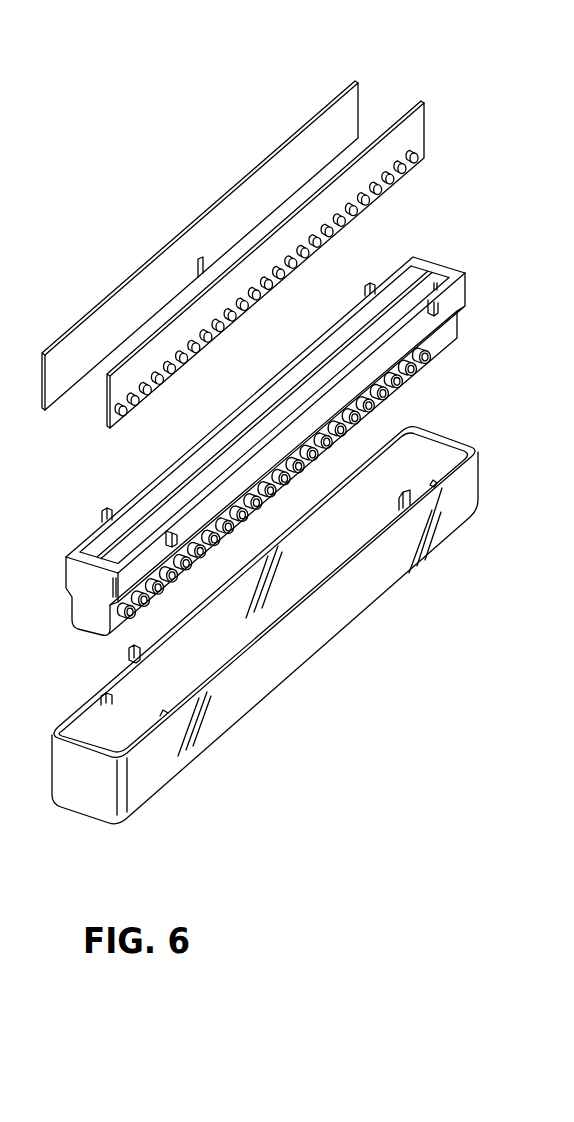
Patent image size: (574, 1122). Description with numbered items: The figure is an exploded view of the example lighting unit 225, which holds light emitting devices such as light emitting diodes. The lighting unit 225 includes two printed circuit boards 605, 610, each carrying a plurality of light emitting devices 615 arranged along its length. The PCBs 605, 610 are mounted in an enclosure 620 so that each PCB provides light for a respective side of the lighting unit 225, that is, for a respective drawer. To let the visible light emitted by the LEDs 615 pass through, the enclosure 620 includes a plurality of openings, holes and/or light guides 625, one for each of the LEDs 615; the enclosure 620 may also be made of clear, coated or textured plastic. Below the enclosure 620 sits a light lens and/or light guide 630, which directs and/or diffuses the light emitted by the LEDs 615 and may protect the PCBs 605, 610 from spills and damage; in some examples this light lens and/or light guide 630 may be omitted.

The lighting unit 225 is at (142, 185).
The printed circuit board 605 is at (347, 93).
The printed circuit board 610 is at (412, 108).
The light emitting device 615 is at (420, 160).
The enclosure 620 is at (443, 263).
The opening, hole and/or light guide 625 is at (432, 360).
The light lens and/or light guide 630 is at (362, 590).